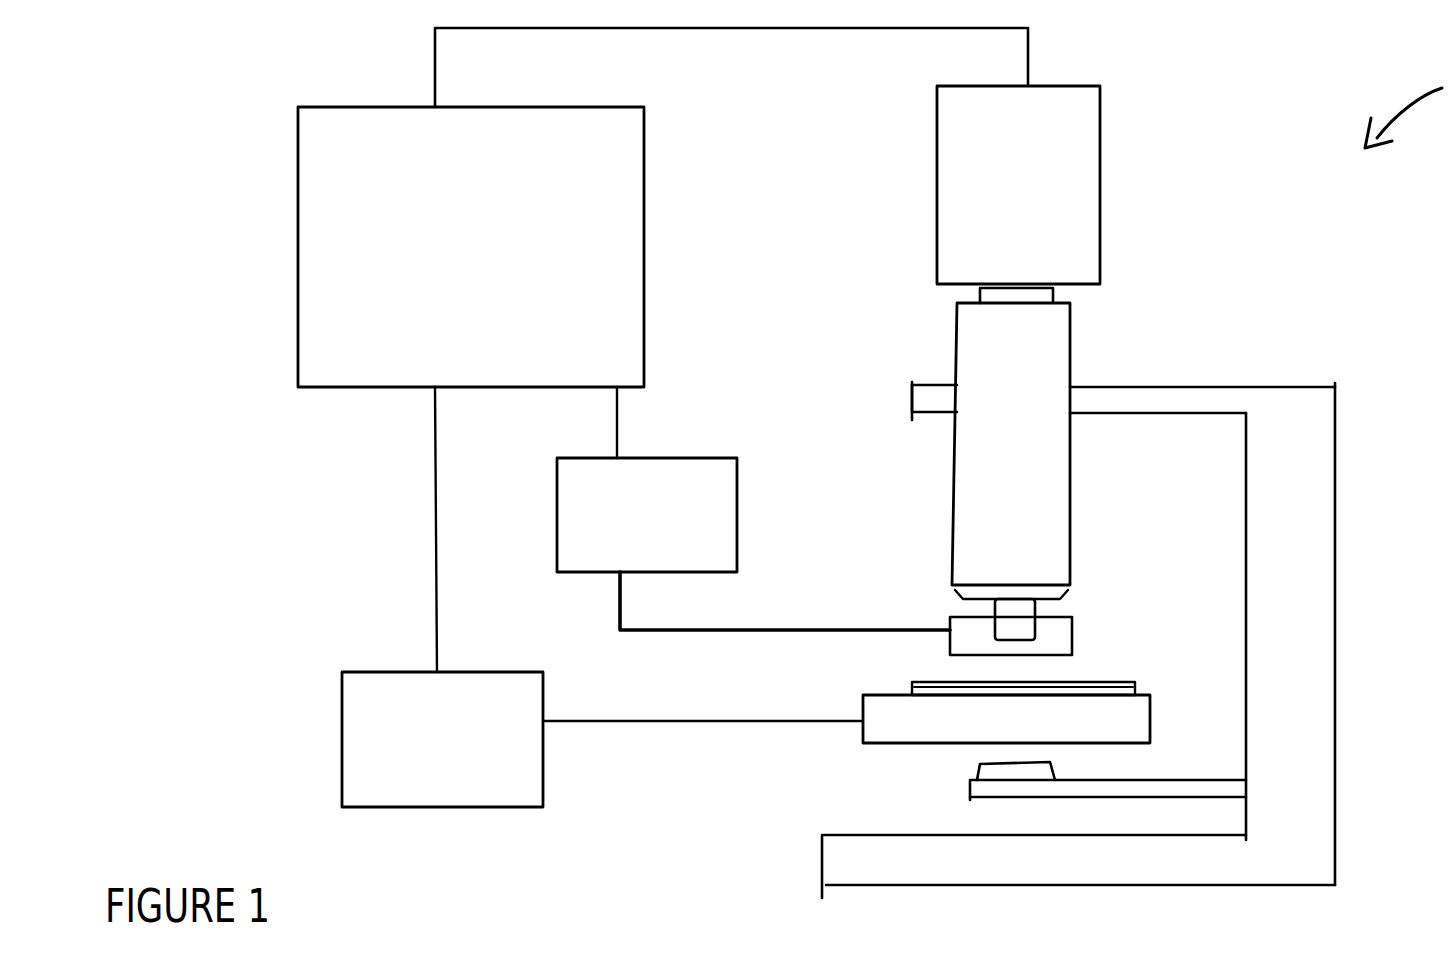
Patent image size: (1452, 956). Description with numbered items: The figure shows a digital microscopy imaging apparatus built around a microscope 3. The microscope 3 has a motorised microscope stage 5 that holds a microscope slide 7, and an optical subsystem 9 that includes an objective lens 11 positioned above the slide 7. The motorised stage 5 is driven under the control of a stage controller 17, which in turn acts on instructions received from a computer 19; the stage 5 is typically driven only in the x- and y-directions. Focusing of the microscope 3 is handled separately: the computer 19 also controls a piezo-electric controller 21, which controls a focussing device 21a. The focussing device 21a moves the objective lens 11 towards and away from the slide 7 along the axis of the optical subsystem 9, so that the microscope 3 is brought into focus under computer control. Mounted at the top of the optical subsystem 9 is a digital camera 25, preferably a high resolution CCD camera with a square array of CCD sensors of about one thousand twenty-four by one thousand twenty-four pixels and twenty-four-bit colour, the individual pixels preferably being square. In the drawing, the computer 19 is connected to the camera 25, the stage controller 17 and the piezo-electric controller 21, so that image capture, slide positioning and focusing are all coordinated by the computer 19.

The microscope 3 is at (1313, 612).
The motorised microscope stage 5 is at (890, 708).
The microscope slide 7 is at (1098, 680).
The optical subsystem 9 is at (1033, 378).
The objective lens 11 is at (1022, 640).
The stage controller 17 is at (442, 739).
The computer 19 is at (471, 247).
The piezo-electric controller 21 is at (647, 515).
The focussing device 21a is at (950, 615).
The digital camera 25 is at (1018, 185).